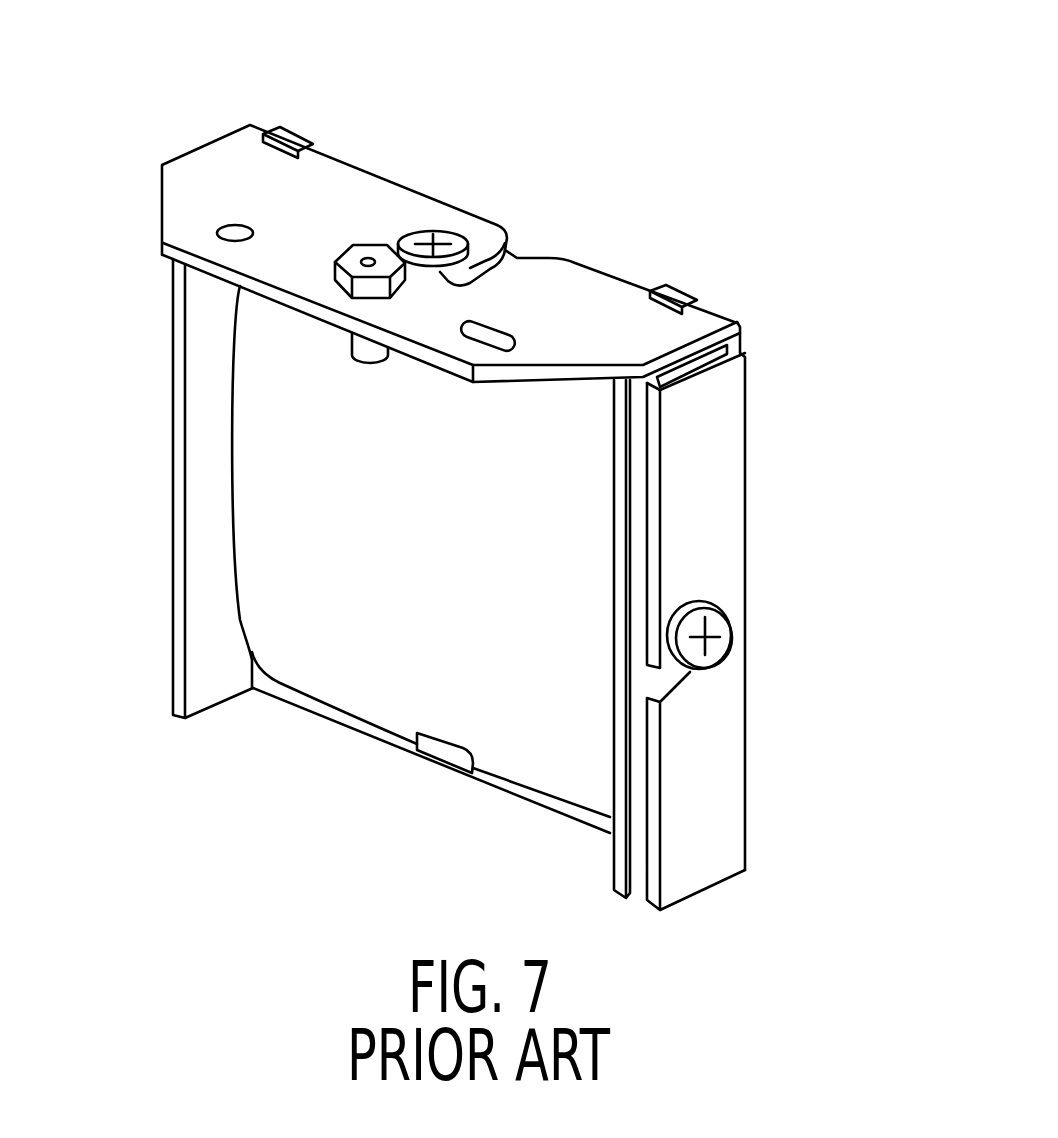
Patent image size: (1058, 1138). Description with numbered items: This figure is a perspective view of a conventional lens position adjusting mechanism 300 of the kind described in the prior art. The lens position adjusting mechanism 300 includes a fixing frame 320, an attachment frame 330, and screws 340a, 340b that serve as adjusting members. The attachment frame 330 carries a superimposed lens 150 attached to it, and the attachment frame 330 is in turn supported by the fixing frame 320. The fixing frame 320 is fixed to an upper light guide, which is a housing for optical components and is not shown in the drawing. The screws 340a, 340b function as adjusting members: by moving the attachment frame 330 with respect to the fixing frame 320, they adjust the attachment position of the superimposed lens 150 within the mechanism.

The lens position adjusting mechanism 300 is at (582, 147).
The fixing frame 320 is at (580, 292).
The attachment frame 330 is at (207, 533).
The superimposed lens 150 is at (363, 678).
The screw 340a is at (447, 230).
The screw 340b is at (733, 648).